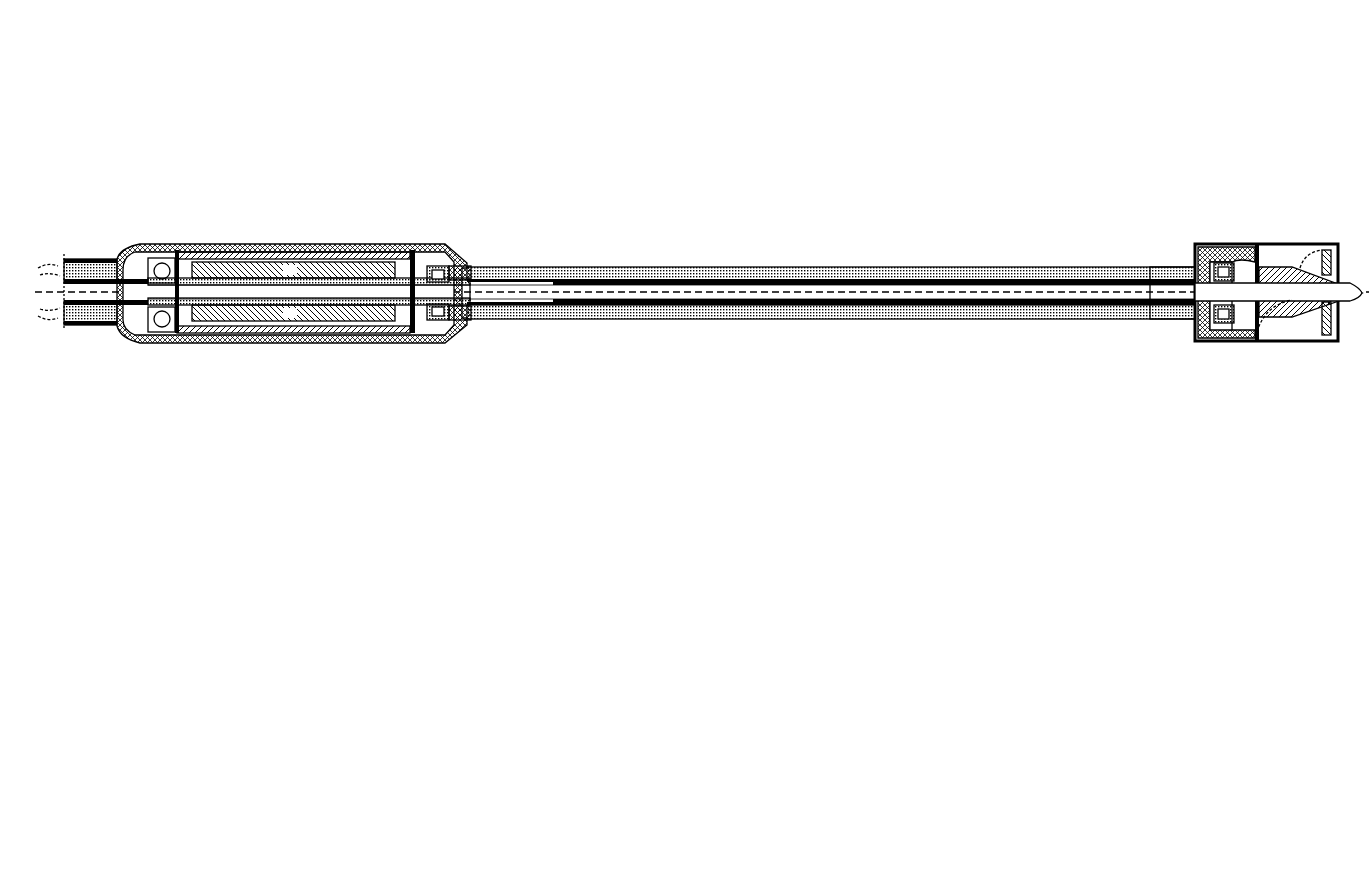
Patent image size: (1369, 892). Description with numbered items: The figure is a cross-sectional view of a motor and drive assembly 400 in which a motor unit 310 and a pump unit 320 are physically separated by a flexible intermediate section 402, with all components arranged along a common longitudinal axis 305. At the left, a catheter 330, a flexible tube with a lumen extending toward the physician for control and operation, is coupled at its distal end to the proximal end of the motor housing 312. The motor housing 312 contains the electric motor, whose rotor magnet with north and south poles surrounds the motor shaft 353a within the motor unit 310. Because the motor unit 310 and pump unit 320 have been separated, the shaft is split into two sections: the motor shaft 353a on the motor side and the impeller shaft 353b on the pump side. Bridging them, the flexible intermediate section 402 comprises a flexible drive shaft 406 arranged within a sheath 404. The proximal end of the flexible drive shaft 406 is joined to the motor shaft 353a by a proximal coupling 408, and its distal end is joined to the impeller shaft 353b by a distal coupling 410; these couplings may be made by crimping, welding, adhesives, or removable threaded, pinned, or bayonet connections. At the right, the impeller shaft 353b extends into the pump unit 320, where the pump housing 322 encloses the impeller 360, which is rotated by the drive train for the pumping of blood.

The motor and drive assembly 400 is at (191, 694).
The motor unit 310 is at (460, 147).
The motor housing 312 is at (188, 243).
The catheter 330 is at (88, 259).
The motor shaft 353a is at (455, 268).
The flexible intermediate section 402 is at (1192, 161).
The sheath 404 is at (668, 267).
The flexible drive shaft 406 is at (597, 268).
The proximal coupling 408 is at (525, 267).
The longitudinal axis 305 is at (841, 291).
The distal coupling 410 is at (1155, 267).
The pump unit 320 is at (1348, 143).
The pump housing 322 is at (1258, 244).
The impeller shaft 353b is at (1250, 262).
The impeller 360 is at (1318, 263).